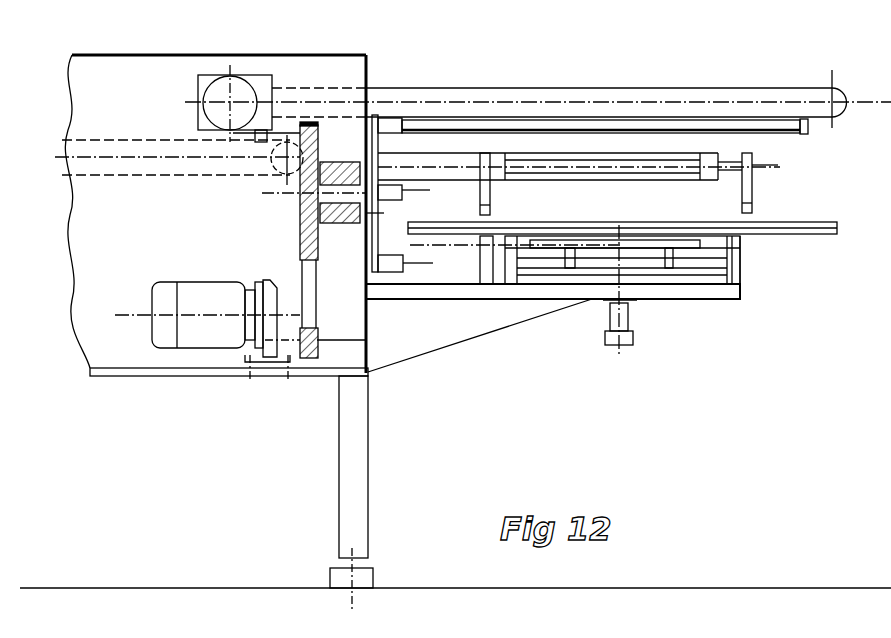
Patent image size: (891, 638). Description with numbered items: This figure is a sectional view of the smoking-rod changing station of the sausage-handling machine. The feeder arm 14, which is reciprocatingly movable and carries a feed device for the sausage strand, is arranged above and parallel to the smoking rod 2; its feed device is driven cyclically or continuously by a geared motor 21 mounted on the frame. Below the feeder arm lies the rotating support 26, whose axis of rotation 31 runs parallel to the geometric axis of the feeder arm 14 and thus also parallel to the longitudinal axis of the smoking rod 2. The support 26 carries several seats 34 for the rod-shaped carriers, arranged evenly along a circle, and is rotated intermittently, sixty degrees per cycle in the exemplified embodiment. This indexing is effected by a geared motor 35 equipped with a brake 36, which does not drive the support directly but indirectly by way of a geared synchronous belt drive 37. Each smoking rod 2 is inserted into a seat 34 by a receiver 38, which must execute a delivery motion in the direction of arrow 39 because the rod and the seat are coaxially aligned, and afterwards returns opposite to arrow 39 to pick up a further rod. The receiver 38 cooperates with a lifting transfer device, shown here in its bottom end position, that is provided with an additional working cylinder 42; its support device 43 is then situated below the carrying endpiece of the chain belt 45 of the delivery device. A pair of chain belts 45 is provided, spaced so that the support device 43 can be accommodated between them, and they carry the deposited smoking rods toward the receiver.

The smoking rod 2 is at (790, 127).
The feeder arm 14 is at (707, 88).
The geared motor 21 is at (208, 78).
The support 26 is at (369, 252).
The axis of rotation 31 is at (283, 195).
The seat 34 is at (403, 287).
The geared motor 35 is at (207, 335).
The brake 36 is at (272, 298).
The geared synchronous belt drive 37 is at (325, 325).
The receiver 38 is at (757, 195).
The arrow 39 is at (546, 200).
The working cylinder 42 is at (612, 333).
The support device 43 is at (710, 258).
The chain belt 45 is at (478, 257).